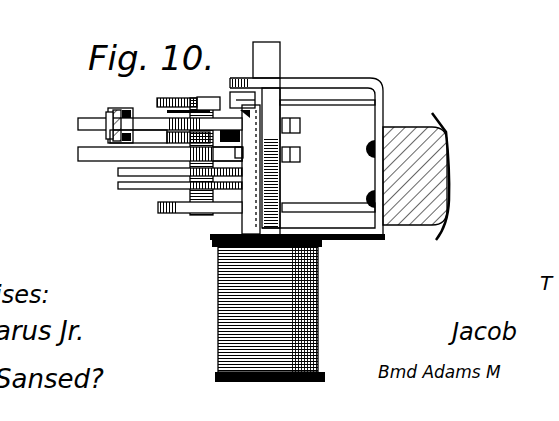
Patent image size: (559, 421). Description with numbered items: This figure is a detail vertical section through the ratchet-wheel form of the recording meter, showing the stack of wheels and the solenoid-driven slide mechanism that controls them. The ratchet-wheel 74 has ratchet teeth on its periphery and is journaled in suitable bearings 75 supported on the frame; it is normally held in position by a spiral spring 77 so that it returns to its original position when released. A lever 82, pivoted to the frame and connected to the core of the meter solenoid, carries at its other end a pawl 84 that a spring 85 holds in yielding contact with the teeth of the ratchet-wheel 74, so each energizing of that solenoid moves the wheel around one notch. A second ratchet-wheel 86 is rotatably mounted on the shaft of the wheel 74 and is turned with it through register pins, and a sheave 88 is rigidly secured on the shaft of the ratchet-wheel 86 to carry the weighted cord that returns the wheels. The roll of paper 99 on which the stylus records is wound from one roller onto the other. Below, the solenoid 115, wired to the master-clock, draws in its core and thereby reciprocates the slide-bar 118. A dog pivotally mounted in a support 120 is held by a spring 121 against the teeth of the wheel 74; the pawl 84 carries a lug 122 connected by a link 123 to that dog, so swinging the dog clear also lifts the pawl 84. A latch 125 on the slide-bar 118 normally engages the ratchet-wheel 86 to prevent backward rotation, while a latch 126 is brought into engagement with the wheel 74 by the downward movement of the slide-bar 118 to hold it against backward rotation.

The ratchet-wheel 74 is at (78, 124).
The bearings 75 is at (348, 100).
The spiral spring 77 is at (144, 114).
The lever 82 is at (110, 113).
The pawl 84 is at (141, 132).
The spring 85 is at (122, 108).
The ratchet-wheel 86 is at (78, 154).
The sheave 88 is at (171, 191).
The roll of paper 99 is at (443, 124).
The solenoid 115 is at (220, 276).
The slide-bar 118 is at (278, 53).
The support 120 is at (300, 80).
The spring 121 is at (285, 136).
The lug 122 is at (200, 96).
The link 123 is at (222, 107).
The latch 125 is at (237, 150).
The latch 126 is at (242, 98).